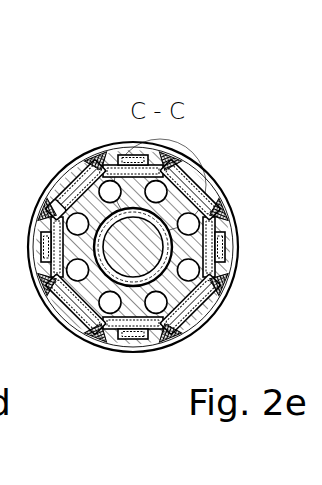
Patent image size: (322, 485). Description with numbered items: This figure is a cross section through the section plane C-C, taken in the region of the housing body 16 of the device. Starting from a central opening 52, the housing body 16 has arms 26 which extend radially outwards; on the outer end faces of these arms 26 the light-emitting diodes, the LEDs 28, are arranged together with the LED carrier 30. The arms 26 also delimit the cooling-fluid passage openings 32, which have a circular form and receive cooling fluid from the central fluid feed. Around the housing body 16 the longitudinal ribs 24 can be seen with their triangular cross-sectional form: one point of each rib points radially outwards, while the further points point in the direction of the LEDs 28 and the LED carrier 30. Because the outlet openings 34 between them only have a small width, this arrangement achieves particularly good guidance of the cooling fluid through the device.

The housing body 16 is at (210, 177).
The longitudinal ribs 24 is at (96, 158).
The arms 26 is at (128, 303).
The LEDs 28 is at (65, 185).
The LED carrier 30 is at (62, 203).
The cooling-fluid passage openings 32 is at (158, 184).
The outlet openings 34 is at (232, 213).
The central opening 52 is at (205, 300).